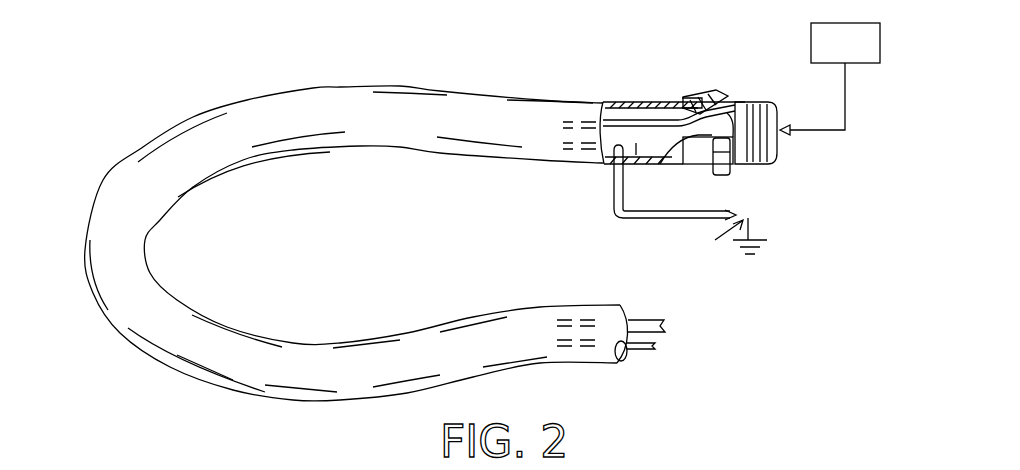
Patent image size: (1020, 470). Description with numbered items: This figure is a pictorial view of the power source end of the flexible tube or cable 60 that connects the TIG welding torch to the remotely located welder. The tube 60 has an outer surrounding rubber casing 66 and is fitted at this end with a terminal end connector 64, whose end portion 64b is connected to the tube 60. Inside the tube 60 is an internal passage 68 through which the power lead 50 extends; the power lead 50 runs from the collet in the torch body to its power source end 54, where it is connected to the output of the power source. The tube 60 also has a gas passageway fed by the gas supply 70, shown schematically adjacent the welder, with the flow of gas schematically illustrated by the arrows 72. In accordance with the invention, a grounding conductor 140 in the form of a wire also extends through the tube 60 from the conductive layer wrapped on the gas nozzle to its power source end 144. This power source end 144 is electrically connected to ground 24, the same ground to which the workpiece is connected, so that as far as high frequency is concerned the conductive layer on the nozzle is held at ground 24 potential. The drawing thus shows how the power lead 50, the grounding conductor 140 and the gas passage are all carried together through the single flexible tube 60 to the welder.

The ground 24 is at (768, 247).
The power lead 50 is at (633, 123).
The power source end of power lead 54 is at (727, 163).
The flexible tube 60 is at (382, 85).
The terminal end connector 64 is at (717, 93).
The end portion of connector 64b is at (691, 100).
The rubber casing 66 is at (252, 100).
The internal passage 68 is at (633, 168).
The gas supply 70 is at (811, 43).
The gas flow arrows 72 is at (821, 132).
The grounding conductor 140 is at (657, 223).
The power source end of grounding conductor 144 is at (708, 246).